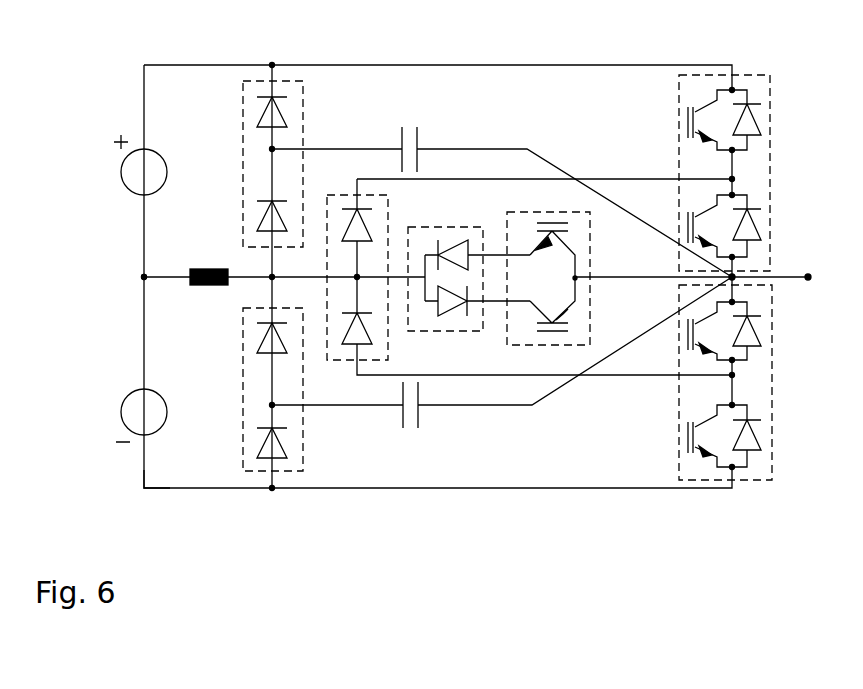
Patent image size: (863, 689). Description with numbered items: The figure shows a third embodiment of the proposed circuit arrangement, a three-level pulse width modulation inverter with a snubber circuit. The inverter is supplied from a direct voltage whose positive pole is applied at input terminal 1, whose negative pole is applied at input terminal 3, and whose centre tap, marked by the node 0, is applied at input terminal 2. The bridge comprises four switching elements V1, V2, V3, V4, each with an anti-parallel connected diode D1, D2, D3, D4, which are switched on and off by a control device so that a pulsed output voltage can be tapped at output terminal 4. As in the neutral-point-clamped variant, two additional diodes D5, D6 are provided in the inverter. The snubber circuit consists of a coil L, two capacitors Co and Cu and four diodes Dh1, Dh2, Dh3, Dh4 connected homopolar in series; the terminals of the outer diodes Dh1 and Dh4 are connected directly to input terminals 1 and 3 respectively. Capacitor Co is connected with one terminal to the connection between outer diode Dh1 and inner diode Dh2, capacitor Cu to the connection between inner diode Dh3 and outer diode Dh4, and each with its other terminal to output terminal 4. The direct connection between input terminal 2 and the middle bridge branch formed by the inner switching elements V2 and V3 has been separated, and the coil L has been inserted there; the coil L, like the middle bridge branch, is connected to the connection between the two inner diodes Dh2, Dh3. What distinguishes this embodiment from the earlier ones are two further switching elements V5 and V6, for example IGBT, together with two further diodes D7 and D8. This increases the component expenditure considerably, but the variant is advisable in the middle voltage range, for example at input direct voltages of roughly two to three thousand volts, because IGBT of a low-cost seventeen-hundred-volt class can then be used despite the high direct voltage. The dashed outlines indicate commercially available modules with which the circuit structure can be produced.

The input terminal 1 is at (135, 63).
The input terminal 2 is at (135, 260).
The input terminal 3 is at (135, 487).
The output terminal 4 is at (710, 278).
The neutral point 0 is at (134, 277).
The coil L is at (298, 291).
The outer diode Dh1 is at (242, 164).
The inner diode Dh2 is at (234, 218).
The inner diode Dh3 is at (242, 389).
The outer diode Dh4 is at (236, 441).
The capacitor Co is at (502, 182).
The capacitor Cu is at (502, 371).
The additional diode D5 is at (523, 219).
The additional diode D6 is at (524, 332).
The further diode D7 is at (477, 233).
The further diode D8 is at (477, 321).
The further switching element V5 is at (552, 230).
The further switching element V6 is at (552, 328).
The switching element V1 is at (688, 120).
The inner switching element V2 is at (688, 226).
The inner switching element V3 is at (690, 334).
The switching element V4 is at (689, 436).
The diode D1 is at (769, 120).
The diode D2 is at (769, 226).
The diode D3 is at (771, 331).
The diode D4 is at (771, 436).